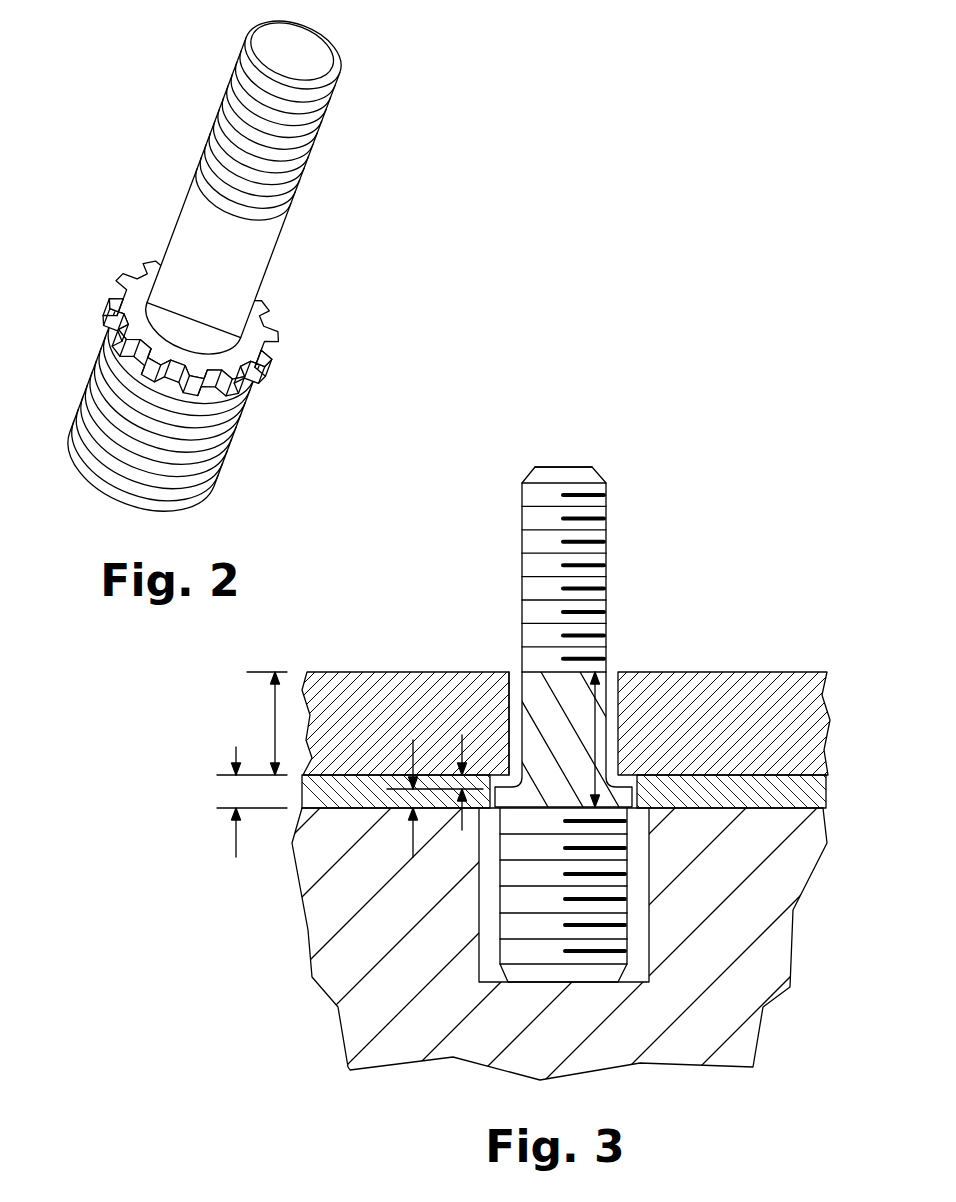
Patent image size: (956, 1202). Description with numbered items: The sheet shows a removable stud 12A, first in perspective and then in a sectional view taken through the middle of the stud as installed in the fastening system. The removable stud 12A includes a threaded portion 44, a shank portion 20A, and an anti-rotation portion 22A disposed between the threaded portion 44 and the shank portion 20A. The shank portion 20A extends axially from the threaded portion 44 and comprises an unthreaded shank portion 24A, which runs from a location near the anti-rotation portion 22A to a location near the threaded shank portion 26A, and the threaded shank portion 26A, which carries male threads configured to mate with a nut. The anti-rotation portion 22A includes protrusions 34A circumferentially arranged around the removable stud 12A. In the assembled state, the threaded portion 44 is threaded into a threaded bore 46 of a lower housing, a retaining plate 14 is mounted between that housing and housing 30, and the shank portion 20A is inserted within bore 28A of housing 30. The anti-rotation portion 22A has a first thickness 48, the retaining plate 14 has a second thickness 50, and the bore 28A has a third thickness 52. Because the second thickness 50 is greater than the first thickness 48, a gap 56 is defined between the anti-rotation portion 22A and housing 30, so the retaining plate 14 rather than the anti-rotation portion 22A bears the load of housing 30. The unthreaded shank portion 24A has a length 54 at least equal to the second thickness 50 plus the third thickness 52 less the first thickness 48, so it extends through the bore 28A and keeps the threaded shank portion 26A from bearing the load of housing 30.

In FIG. 2, the removable stud 12A is at (313, 44).
In FIG. 3, the removable stud 12A is at (579, 466).
In FIG. 3, the retaining plate 14 is at (806, 787).
In FIG. 2, the shank portion 20A is at (272, 272).
In FIG. 3, the shank portion 20A is at (521, 543).
In FIG. 2, the anti-rotation portion 22A is at (272, 340).
In FIG. 2, the unthreaded shank portion 24A is at (166, 228).
In FIG. 3, the unthreaded shank portion 24A is at (500, 693).
In FIG. 2, the threaded shank portion 26A is at (212, 104).
In FIG. 3, the threaded shank portion 26A is at (620, 538).
In FIG. 3, the bore 28A is at (503, 718).
In FIG. 3, the housing 30 is at (729, 688).
In FIG. 2, the protrusions 34A is at (277, 375).
In FIG. 2, the threaded portion 44 is at (82, 408).
In FIG. 3, the threaded portion 44 is at (620, 932).
In FIG. 3, the threaded bore 46 is at (488, 950).
In FIG. 3, the first thickness 48 is at (413, 858).
In FIG. 3, the second thickness 50 is at (236, 845).
In FIG. 3, the third thickness 52 is at (275, 718).
In FIG. 3, the length 54 is at (603, 708).
In FIG. 3, the gap 56 is at (462, 830).